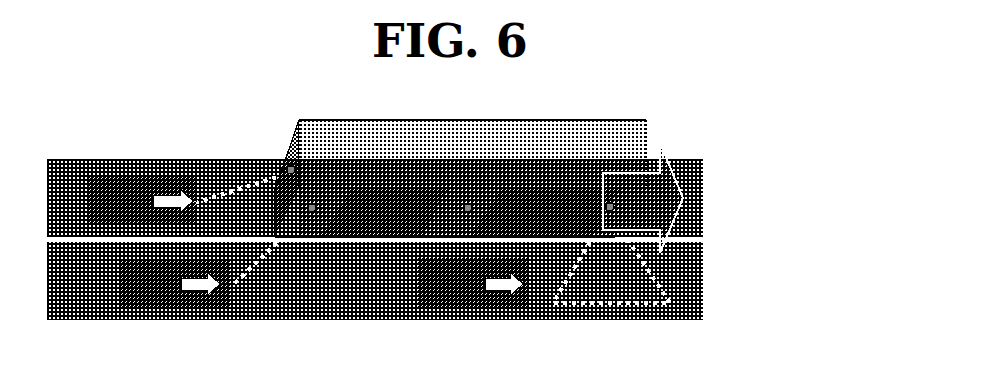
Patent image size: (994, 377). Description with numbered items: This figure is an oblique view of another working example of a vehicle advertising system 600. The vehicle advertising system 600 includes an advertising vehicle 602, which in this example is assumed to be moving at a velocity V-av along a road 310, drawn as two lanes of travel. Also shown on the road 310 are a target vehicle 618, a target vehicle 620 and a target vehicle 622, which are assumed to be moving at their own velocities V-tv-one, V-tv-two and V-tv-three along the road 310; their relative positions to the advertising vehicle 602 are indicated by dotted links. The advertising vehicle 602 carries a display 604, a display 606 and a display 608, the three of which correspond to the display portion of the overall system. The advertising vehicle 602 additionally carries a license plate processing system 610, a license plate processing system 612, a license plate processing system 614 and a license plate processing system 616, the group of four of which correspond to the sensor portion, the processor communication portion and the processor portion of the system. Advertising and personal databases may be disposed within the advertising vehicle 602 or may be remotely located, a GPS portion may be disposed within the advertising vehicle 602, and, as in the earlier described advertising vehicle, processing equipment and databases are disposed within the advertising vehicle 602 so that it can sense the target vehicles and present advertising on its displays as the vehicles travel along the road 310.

The vehicle advertising system 600 is at (435, 215).
The advertising vehicle 602 is at (450, 171).
The display 604 is at (279, 158).
The display 606 is at (392, 197).
The display 608 is at (547, 198).
The license plate processing system 610 is at (295, 168).
The license plate processing system 612 is at (316, 205).
The license plate processing system 614 is at (468, 204).
The license plate processing system 616 is at (610, 203).
The target vehicle 618 is at (117, 182).
The target vehicle 620 is at (168, 298).
The target vehicle 622 is at (450, 297).
The road 310 is at (703, 197).